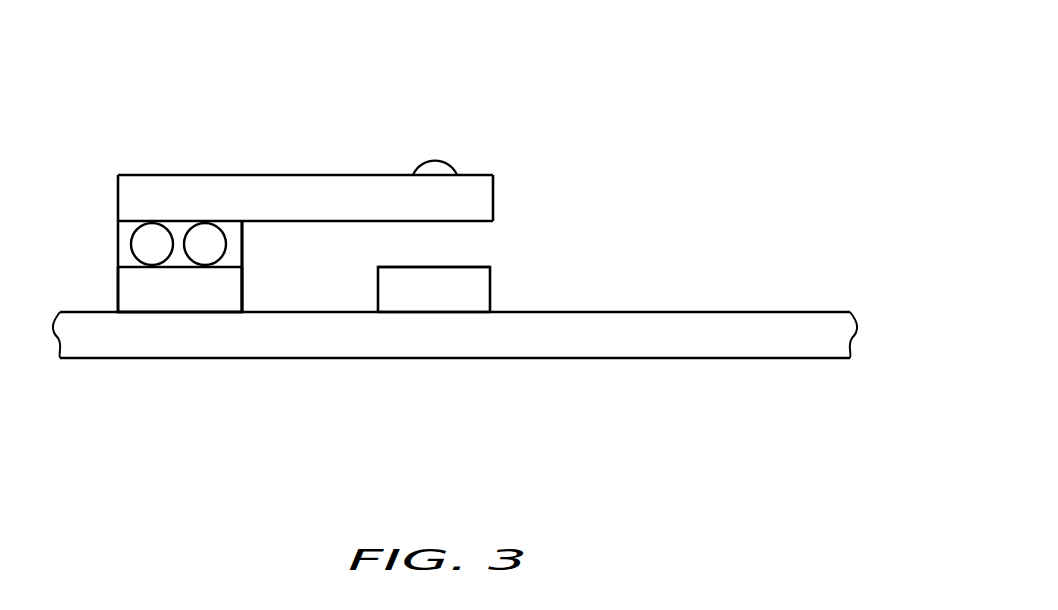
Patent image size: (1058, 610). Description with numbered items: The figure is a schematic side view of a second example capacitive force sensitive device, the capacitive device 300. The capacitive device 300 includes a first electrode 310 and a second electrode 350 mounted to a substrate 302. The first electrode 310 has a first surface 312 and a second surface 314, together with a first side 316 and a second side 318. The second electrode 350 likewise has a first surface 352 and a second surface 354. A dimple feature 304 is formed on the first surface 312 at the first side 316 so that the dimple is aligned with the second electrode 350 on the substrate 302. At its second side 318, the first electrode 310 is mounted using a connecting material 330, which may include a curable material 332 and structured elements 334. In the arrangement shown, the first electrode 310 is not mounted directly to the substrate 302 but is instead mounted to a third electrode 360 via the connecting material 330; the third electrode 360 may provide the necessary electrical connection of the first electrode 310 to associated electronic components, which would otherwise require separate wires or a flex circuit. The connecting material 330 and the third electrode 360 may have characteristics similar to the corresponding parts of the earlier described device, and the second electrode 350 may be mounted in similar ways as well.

The capacitive device 300 is at (663, 178).
The substrate 302 is at (715, 320).
The dimple feature 304 is at (429, 160).
The first electrode 310 is at (356, 168).
The first surface 312 is at (322, 175).
The second surface 314 is at (428, 222).
The first side 316 is at (478, 174).
The second side 318 is at (137, 174).
The connecting material 330 is at (191, 277).
The curable material 332 is at (232, 257).
The structured elements 334 is at (157, 242).
The second electrode 350 is at (497, 327).
The first surface 352 is at (448, 266).
The second surface 354 is at (442, 312).
The third electrode 360 is at (125, 290).